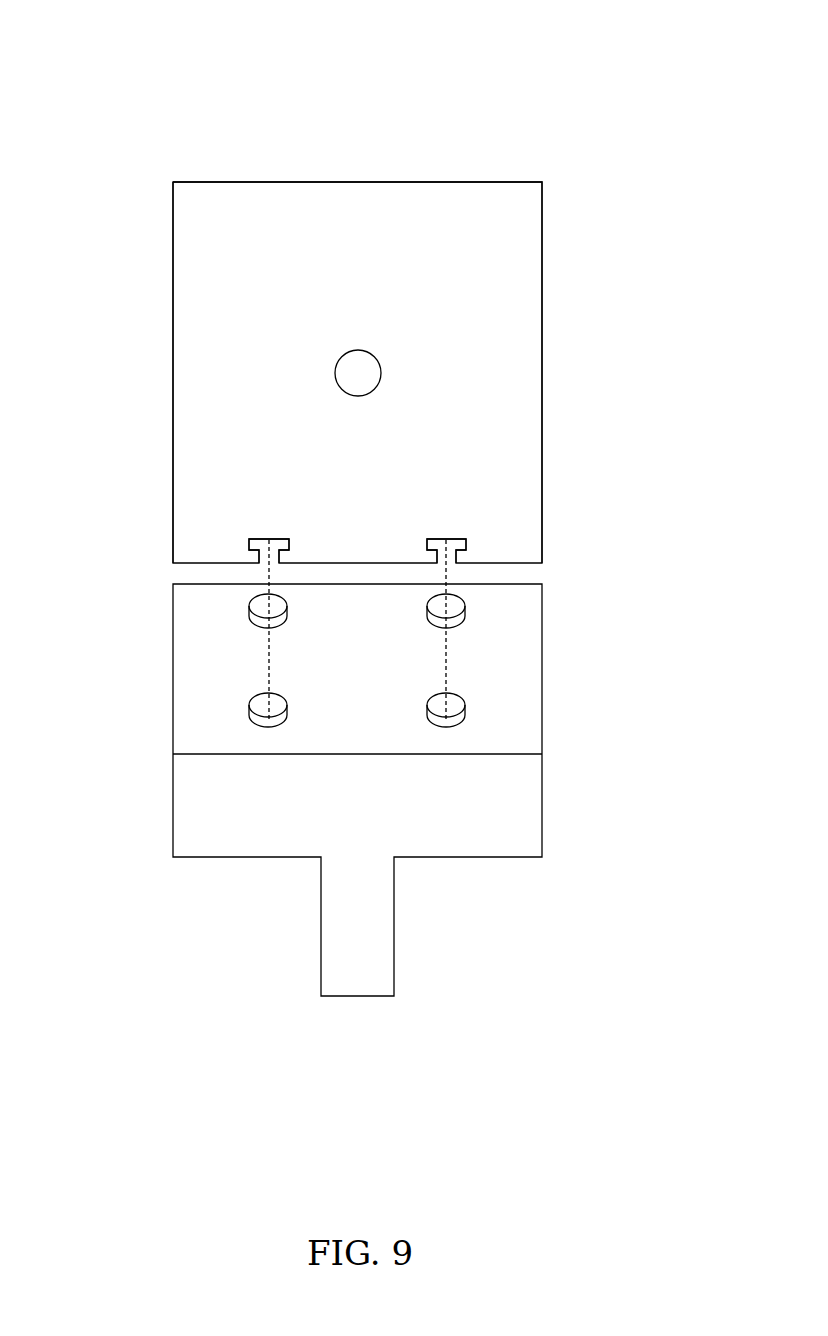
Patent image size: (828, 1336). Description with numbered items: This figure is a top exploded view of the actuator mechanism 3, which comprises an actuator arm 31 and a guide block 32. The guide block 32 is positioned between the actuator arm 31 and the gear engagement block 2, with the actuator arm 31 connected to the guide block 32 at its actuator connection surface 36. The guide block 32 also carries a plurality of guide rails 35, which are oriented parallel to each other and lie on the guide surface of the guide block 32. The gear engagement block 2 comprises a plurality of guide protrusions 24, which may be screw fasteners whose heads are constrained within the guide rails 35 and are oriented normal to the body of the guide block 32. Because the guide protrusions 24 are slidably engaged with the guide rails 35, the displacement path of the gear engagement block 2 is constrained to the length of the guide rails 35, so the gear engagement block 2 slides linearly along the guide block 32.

The gear engagement block 2 is at (576, 589).
The actuator mechanism 3 is at (288, 101).
The guide protrusions 24 is at (258, 604).
The actuator arm 31 is at (365, 375).
The guide block 32 is at (148, 425).
The guide rails 35 is at (269, 539).
The actuator connection surface 36 is at (261, 283).